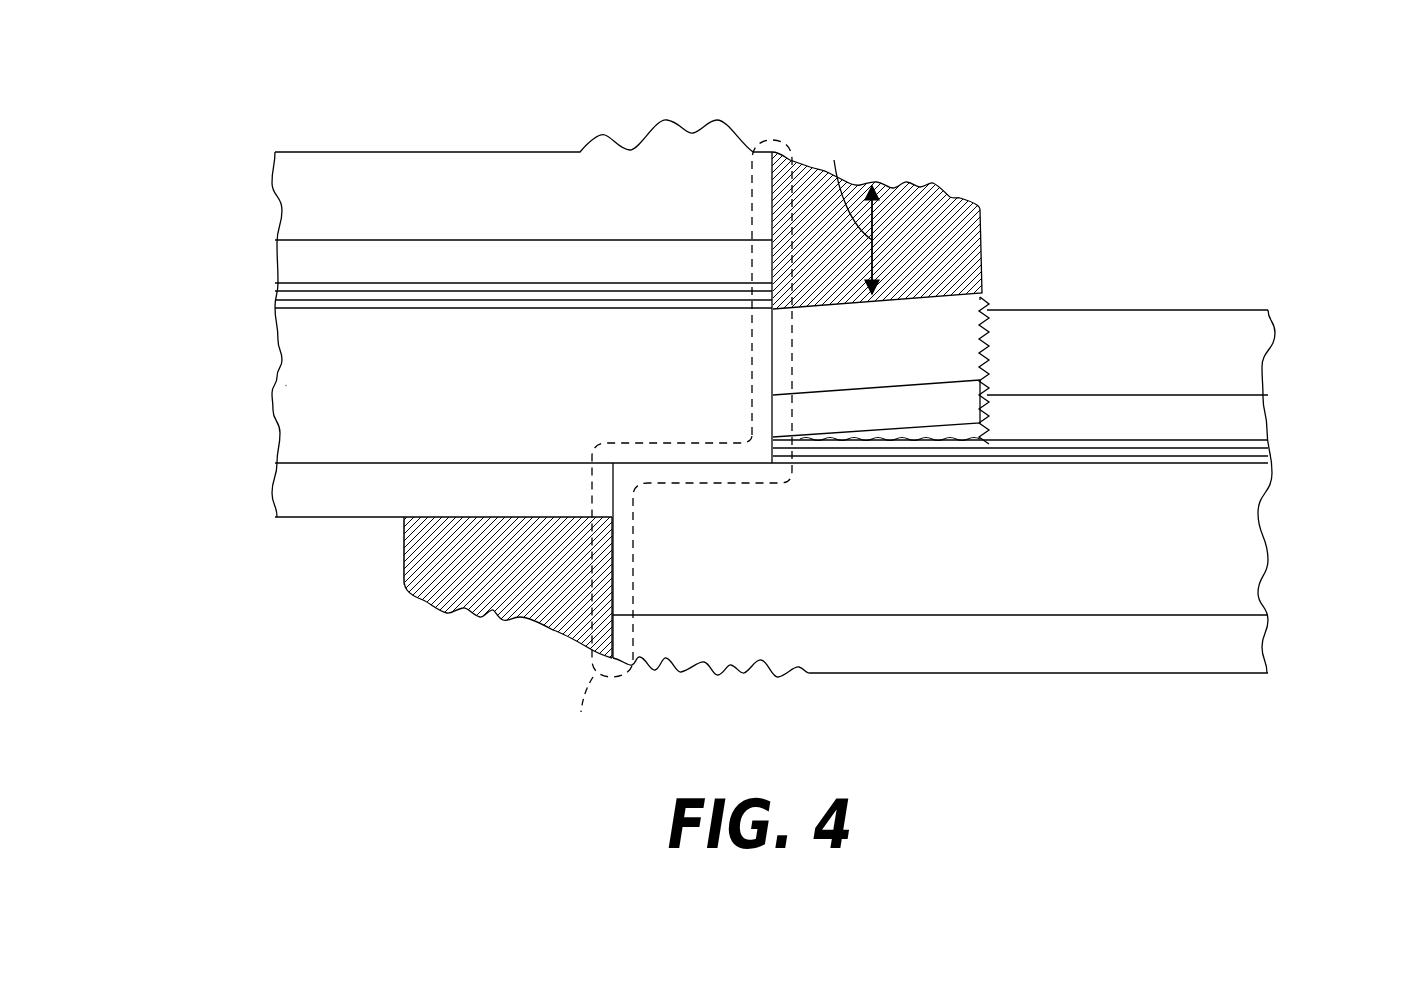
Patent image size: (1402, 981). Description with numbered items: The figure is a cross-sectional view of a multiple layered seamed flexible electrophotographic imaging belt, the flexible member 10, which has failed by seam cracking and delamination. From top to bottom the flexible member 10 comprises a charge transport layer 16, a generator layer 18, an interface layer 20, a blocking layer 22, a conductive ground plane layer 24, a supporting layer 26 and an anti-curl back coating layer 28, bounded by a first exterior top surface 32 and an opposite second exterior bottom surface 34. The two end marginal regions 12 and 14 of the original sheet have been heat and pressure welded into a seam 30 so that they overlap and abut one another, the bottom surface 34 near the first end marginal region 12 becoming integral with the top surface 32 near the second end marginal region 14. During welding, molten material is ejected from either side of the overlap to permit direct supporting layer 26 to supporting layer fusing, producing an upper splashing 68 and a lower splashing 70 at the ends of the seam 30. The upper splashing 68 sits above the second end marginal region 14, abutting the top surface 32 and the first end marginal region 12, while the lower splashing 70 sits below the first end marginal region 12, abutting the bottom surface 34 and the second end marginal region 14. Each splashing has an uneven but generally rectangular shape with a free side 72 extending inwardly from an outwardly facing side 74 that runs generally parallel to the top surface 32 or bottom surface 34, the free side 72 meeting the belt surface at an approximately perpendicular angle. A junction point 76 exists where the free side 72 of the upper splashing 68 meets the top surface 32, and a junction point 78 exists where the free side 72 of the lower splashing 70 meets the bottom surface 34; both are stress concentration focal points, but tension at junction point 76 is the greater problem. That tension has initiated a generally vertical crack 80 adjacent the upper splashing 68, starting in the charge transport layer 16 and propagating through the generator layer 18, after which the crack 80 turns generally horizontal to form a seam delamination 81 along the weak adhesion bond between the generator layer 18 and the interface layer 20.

The flexible member 10 is at (1207, 171).
The first end marginal region 12 is at (681, 90).
The second end marginal region 14 is at (679, 694).
The charge transport layer 16 is at (288, 187).
The generator layer 18 is at (288, 250).
The interface layer 20 is at (278, 288).
The blocking layer 22 is at (278, 298).
The conductive ground plane layer 24 is at (278, 305).
The supporting layer 26 is at (288, 385).
The anti-curl back coating layer 28 is at (285, 480).
The seam 30 is at (580, 711).
The top surface 32 is at (420, 152).
The bottom surface 34 is at (305, 520).
The upper splashing 68 is at (995, 111).
The lower splashing 70 is at (461, 638).
The free side 72 is at (978, 206).
The outwardly facing side 74 is at (933, 182).
The junction point 76 is at (985, 300).
The junction point 78 is at (404, 530).
The crack 80 is at (987, 304).
The seam delamination 81 is at (967, 436).